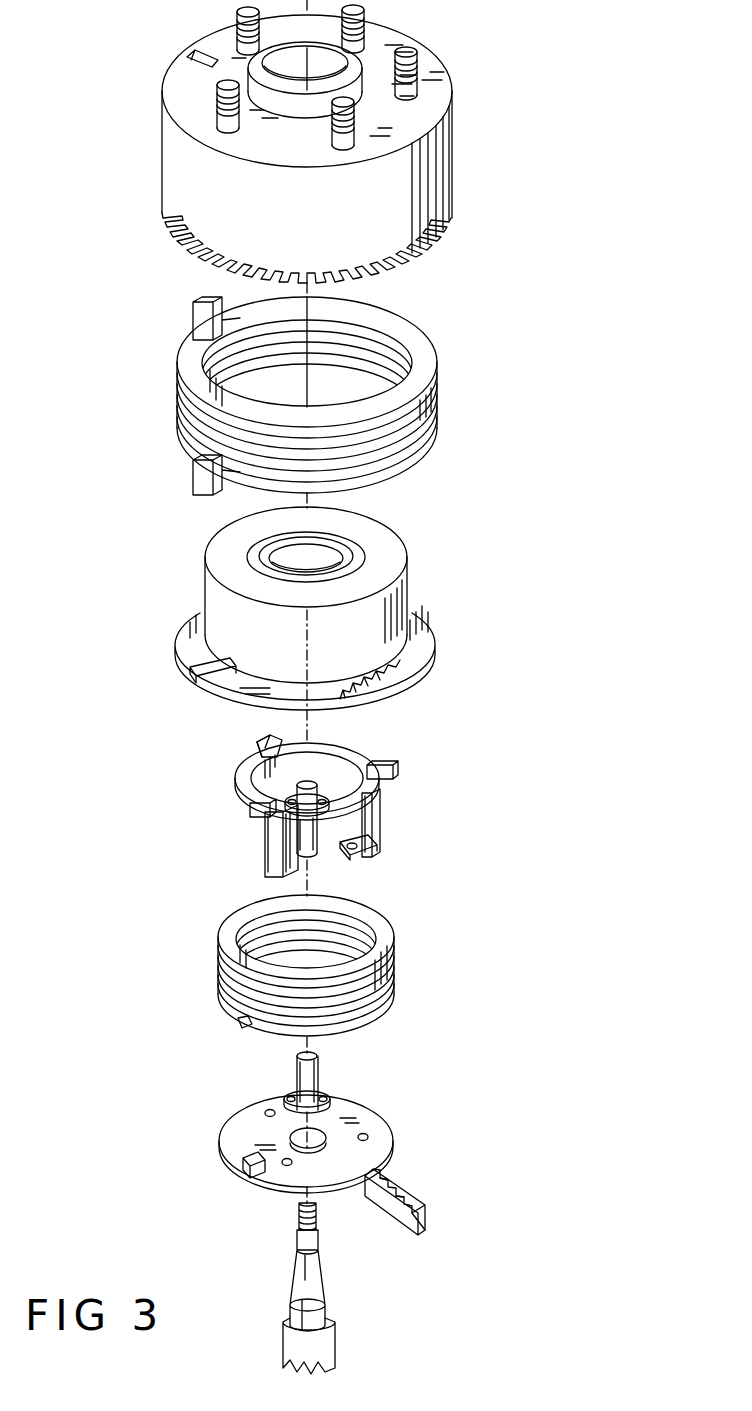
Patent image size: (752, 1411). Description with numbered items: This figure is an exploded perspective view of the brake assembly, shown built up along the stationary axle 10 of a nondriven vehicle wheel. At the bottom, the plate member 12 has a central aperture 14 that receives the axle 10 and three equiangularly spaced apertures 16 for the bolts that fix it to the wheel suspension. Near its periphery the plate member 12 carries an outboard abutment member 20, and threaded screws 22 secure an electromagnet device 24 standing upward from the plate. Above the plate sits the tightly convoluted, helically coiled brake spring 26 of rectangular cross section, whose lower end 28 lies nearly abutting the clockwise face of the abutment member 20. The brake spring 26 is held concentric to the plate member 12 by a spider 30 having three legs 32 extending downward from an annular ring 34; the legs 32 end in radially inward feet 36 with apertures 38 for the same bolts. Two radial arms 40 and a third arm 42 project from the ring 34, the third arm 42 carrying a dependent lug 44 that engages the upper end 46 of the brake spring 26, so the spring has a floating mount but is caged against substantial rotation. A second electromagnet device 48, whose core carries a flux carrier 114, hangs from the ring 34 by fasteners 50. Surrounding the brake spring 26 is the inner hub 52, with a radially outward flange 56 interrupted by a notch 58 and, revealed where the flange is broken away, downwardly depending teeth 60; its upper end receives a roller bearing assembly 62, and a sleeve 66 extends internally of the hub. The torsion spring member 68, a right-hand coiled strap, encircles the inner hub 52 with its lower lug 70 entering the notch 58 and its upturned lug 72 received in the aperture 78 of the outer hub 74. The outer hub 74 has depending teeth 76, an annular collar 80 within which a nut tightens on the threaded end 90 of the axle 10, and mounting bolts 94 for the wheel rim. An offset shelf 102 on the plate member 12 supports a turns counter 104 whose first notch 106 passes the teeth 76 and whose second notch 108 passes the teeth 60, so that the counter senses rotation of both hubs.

The stationary axle 10 is at (316, 1265).
The plate member 12 is at (213, 1128).
The central aperture 14 is at (322, 1140).
The apertures 16 is at (268, 1110).
The outboard abutment member 20 is at (243, 1170).
The threaded screws 22 is at (330, 1097).
The electromagnet device 24 is at (320, 1062).
The brake spring 26 is at (216, 962).
The end of lowermost convolution 28 is at (242, 1026).
The spider 30 is at (232, 795).
The legs 32 is at (381, 822).
The annular ring 34 is at (330, 750).
The feet 36 is at (364, 857).
The apertures 38 is at (358, 846).
The arms 40 is at (395, 778).
The third arm 42 is at (262, 742).
The dependent lug 44 is at (262, 750).
The end of uppermost convolution 46 is at (266, 906).
The second electromagnet device 48 is at (313, 860).
The fasteners 50 is at (327, 800).
The inner hub 52 is at (202, 590).
The flange 56 is at (430, 645).
The notch 58 is at (190, 670).
The teeth 60 is at (388, 688).
The roller bearing assembly 62 is at (252, 548).
The sleeve 66 is at (320, 560).
The torsion spring member 68 is at (175, 395).
The lug 70 is at (193, 480).
The upturned lug 72 is at (193, 315).
The outer hub 74 is at (158, 136).
The teeth 76 is at (178, 243).
The aperture 78 is at (186, 56).
The annular collar 80 is at (353, 64).
The threaded end 90 is at (298, 1218).
The mounting bolts 94 is at (236, 11).
The offset shelf 102 is at (424, 1220).
The turns counter 104 is at (410, 1185).
The first notch 106 is at (402, 1197).
The second notch 108 is at (378, 1178).
The flux carrier 114 is at (307, 808).